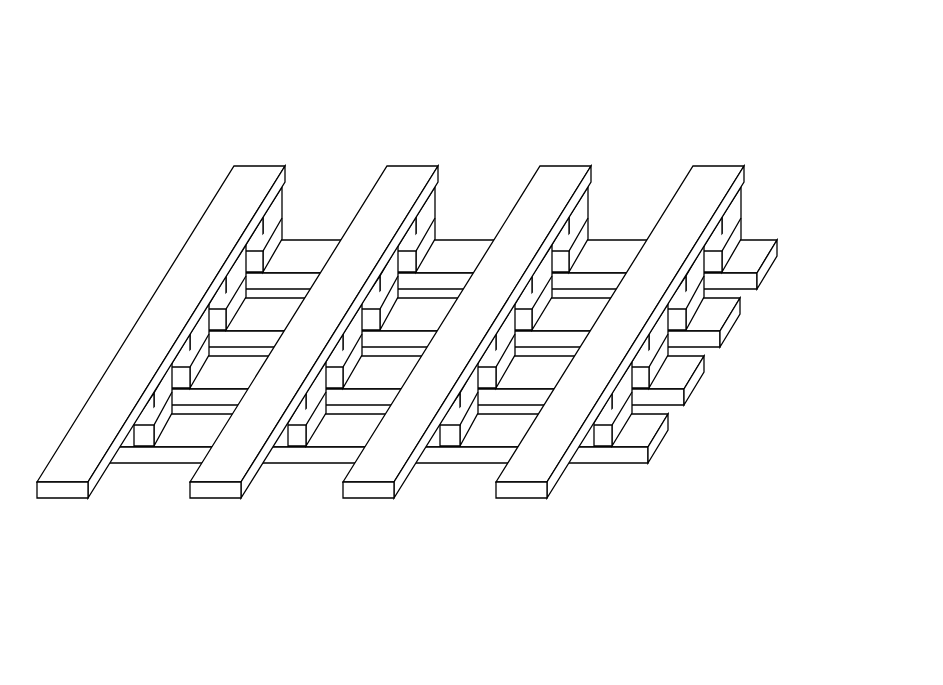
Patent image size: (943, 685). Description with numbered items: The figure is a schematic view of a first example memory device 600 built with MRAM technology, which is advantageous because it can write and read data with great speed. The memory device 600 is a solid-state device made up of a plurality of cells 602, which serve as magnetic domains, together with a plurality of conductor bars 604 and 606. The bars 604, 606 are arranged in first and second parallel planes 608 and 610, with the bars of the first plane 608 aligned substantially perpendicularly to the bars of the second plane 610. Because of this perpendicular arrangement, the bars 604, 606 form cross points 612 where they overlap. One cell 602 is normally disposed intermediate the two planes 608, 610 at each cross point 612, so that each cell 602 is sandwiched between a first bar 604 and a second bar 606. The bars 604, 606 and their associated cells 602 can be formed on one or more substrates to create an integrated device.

The memory device 600 is at (665, 82).
The cell 602 is at (614, 214).
The conductor bar 604 is at (60, 490).
The conductor bar 606 is at (741, 323).
The first parallel plane 608 is at (255, 556).
The second parallel plane 610 is at (750, 393).
The cross point 612 is at (490, 179).